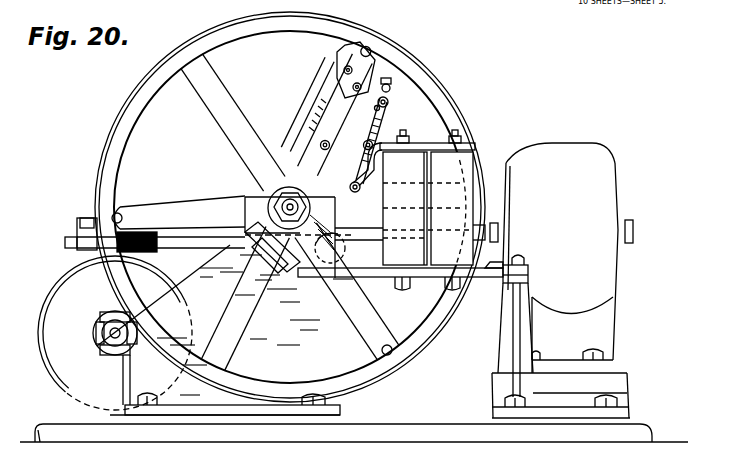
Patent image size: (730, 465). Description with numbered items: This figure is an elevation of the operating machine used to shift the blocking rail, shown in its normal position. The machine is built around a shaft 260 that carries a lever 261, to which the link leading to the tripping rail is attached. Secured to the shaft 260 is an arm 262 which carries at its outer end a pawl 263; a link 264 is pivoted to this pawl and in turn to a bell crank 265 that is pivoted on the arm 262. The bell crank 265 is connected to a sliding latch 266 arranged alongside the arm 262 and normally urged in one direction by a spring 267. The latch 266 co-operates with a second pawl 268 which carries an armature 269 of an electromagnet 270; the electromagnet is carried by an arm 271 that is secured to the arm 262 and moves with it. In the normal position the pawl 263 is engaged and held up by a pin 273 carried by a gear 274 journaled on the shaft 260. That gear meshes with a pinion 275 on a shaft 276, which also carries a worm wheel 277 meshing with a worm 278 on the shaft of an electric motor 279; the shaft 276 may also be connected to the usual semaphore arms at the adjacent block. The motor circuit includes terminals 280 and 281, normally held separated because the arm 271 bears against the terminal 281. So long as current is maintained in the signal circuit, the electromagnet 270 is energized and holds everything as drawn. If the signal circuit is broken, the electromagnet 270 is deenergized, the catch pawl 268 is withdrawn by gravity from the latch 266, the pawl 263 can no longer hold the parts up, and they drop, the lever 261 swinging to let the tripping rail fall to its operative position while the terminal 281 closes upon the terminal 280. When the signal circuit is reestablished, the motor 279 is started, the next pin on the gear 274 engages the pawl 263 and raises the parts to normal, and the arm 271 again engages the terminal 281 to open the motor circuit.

The shaft 260 is at (289, 200).
The lever 261 is at (343, 251).
The arm 262 is at (250, 214).
The pawl 263 is at (343, 55).
The link 264 is at (330, 93).
The bell crank 265 is at (390, 98).
The sliding latch 266 is at (388, 105).
The spring 267 is at (383, 124).
The pawl 268 is at (375, 173).
The armature 269 is at (462, 135).
The electromagnet 270 is at (440, 213).
The arm 271 is at (382, 278).
The pin 273 is at (121, 213).
The gear 274 is at (473, 148).
The pinion 275 is at (96, 334).
The shaft 276 is at (112, 337).
The worm wheel 277 is at (52, 314).
The worm 278 is at (75, 255).
The electric motor 279 is at (561, 280).
The terminal 280 is at (498, 272).
The terminal 281 is at (502, 265).